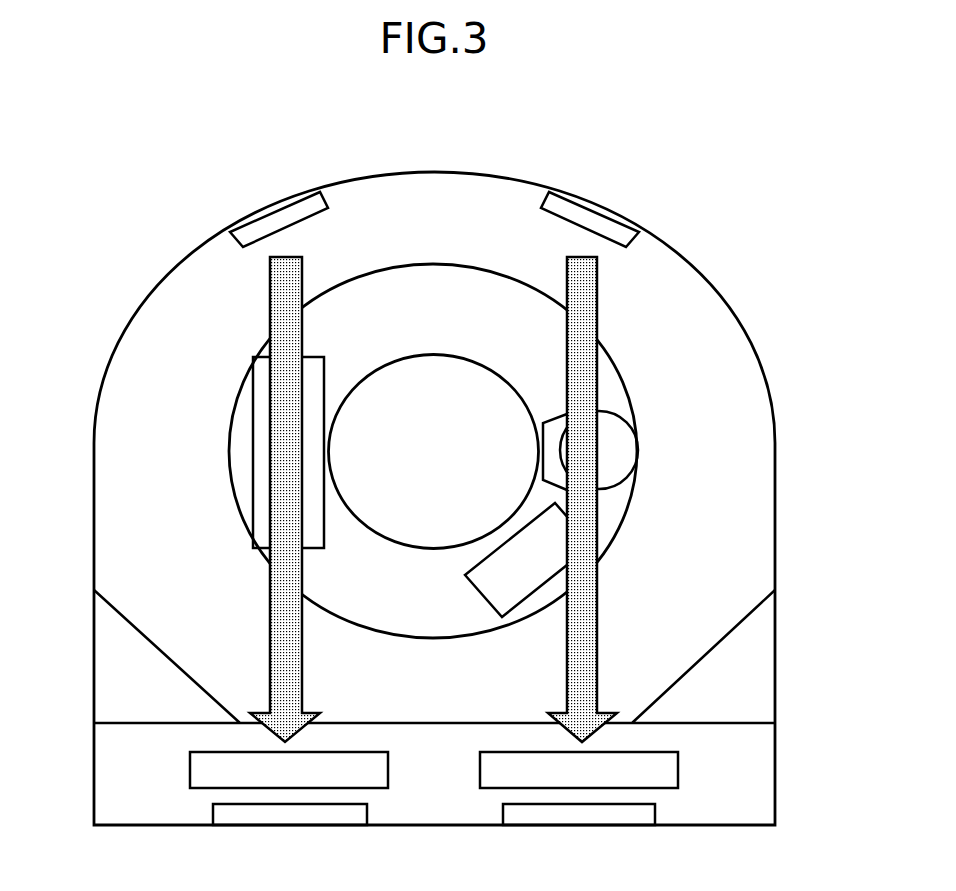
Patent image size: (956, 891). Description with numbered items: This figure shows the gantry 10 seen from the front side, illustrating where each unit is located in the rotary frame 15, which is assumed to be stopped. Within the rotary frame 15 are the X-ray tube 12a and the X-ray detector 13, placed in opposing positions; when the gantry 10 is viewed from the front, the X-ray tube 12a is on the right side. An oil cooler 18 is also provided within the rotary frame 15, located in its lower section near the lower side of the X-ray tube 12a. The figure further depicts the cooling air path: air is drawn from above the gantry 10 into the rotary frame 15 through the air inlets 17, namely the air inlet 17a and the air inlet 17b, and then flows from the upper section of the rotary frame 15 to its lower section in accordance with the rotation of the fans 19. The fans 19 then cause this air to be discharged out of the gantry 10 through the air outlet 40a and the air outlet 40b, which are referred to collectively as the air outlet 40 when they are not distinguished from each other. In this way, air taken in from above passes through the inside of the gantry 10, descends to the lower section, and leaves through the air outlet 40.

The gantry 10 is at (444, 183).
The X-ray tube 12a is at (613, 413).
The X-ray detector 13 is at (262, 440).
The rotary frame 15 is at (632, 508).
The detection sensor 17 is at (457, 200).
The air inlet 17a is at (597, 220).
The air inlet 17b is at (268, 222).
The oil cooler 18 is at (523, 603).
The fan 19 is at (190, 768).
The air outlet 40 is at (434, 842).
The air outlet 40a is at (578, 813).
The air outlet 40b is at (287, 813).